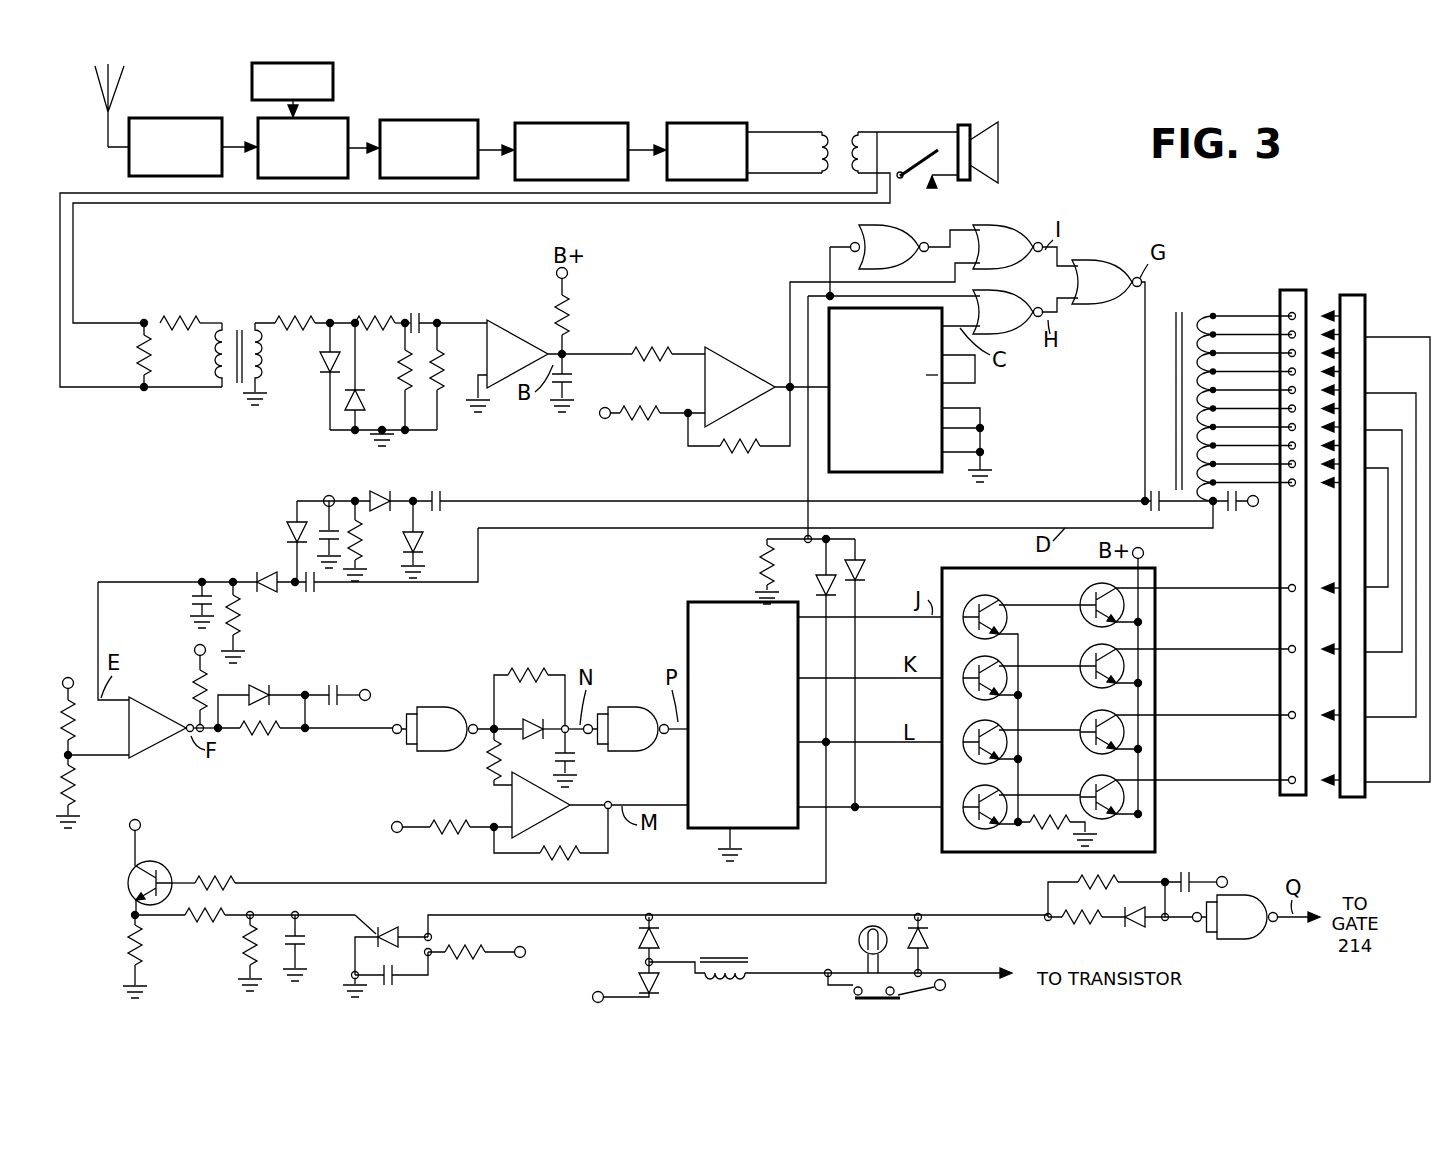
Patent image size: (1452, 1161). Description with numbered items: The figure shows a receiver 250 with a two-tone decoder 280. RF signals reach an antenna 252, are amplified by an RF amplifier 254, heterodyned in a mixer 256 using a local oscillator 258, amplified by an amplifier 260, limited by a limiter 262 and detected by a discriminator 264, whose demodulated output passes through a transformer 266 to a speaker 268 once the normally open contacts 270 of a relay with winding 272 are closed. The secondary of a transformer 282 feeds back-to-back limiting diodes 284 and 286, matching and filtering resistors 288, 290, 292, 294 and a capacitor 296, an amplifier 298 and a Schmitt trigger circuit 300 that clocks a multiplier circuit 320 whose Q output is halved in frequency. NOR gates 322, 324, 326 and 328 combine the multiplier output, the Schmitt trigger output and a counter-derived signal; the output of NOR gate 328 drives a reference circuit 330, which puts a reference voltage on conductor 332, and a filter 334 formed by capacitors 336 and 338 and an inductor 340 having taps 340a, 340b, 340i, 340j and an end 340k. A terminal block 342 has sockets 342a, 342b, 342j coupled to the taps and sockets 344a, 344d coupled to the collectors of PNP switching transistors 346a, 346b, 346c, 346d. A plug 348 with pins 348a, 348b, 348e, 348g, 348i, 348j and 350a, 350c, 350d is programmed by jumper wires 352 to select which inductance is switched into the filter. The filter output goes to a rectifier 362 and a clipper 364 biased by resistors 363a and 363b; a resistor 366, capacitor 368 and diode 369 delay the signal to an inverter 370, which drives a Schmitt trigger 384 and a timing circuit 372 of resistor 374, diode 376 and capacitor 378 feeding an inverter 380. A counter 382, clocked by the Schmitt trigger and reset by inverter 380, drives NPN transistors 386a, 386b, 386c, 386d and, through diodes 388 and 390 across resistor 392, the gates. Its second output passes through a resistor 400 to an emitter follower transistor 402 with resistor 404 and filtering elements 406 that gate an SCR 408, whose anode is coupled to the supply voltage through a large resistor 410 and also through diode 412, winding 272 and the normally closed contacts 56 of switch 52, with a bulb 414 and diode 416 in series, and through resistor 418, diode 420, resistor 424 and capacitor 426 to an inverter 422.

The receiver 250 is at (1048, 170).
The antenna 252 is at (116, 102).
The RF amplifier 254 is at (178, 130).
The mixer 256 is at (336, 138).
The local oscillator 258 is at (333, 83).
The amplifier 260 is at (462, 138).
The limiter 262 is at (582, 140).
The discriminator 264 is at (722, 140).
The transformer 266 is at (846, 129).
The speaker 268 is at (983, 108).
The contacts 270 is at (930, 182).
The winding 272 is at (745, 968).
The decoder 280 is at (248, 450).
The transformer 282 is at (242, 308).
The diode 284 is at (322, 374).
The diode 286 is at (345, 406).
The resistor 288 is at (306, 318).
The resistor 290 is at (380, 318).
The resistor 292 is at (403, 382).
The resistor 294 is at (440, 382).
The capacitor 296 is at (420, 318).
The amplifier 298 is at (505, 345).
The Schmitt trigger circuit 300 is at (740, 356).
The multiplier circuit 320 is at (866, 462).
The NOR gate 322 is at (1005, 328).
The NOR gate 324 is at (870, 232).
The NOR gate 326 is at (1000, 240).
The NOR gate 328 is at (1100, 268).
The reference circuit 330 is at (405, 478).
The conductor 332 is at (290, 518).
The filter 334 is at (1245, 291).
The capacitor 336 is at (1145, 505).
The capacitor 338 is at (1236, 513).
The inductor 340 is at (1205, 305).
The tap 340a is at (1213, 316).
The tap 340b is at (1213, 334).
The tap 340i is at (1213, 464).
The tap 340j is at (1213, 482).
The end 340k is at (1210, 506).
The terminal block 342 is at (1292, 798).
The socket 342a is at (1290, 320).
The socket 342b is at (1290, 338).
The socket 342j is at (1292, 488).
The socket 344a is at (1290, 590).
The socket 344d is at (1290, 777).
The PNP switching transistor 346a is at (1086, 592).
The PNP switching transistor 346b is at (1086, 652).
The PNP switching transistor 346c is at (1088, 720).
The PNP switching transistor 346d is at (1086, 778).
The plug 348 is at (1352, 800).
The pin 348a is at (1338, 315).
The pin 348b is at (1340, 335).
The pin 348e is at (1342, 390).
The pin 348g is at (1342, 428).
The pin 348i is at (1330, 463).
The pin 348j is at (1336, 494).
The pin 350a is at (1330, 590).
The pin 350c is at (1330, 713).
The pin 350d is at (1330, 778).
The jumper wires 352 is at (1413, 756).
The rectifier 362 is at (276, 606).
The resistor 363a is at (75, 728).
The resistor 363b is at (72, 792).
The clipper 364 is at (155, 758).
The resistor 366 is at (275, 738).
The capacitor 368 is at (340, 690).
The diode 369 is at (262, 690).
The inverter 370 is at (440, 716).
The timing circuit 372 is at (574, 664).
The resistor 374 is at (546, 675).
The diode 376 is at (548, 722).
The capacitor 378 is at (597, 760).
The inverter 380 is at (622, 722).
The counter 382 is at (728, 612).
The Schmitt trigger 384 is at (525, 813).
The NPN transistor 386a is at (972, 604).
The NPN transistor 386b is at (962, 664).
The NPN transistor 386c is at (962, 728).
The NPN transistor 386d is at (962, 795).
The diode 388 is at (838, 590).
The diode 390 is at (862, 566).
The resistor 392 is at (766, 543).
The resistor 400 is at (238, 880).
The emitter follower NPN transistor 402 is at (166, 875).
The resistor 404 is at (130, 940).
The filtering elements 406 is at (242, 950).
The SCR 408 is at (393, 928).
The resistor 410 is at (472, 956).
The diode 412 is at (660, 945).
The bulb 414 is at (859, 940).
The diode 416 is at (928, 943).
The resistor 418 is at (1090, 925).
The diode 420 is at (1140, 928).
The inverter 422 is at (1248, 930).
The resistor 424 is at (1086, 878).
The capacitor 426 is at (1195, 860).
The switch 52 is at (836, 995).
The contacts 56 is at (905, 988).